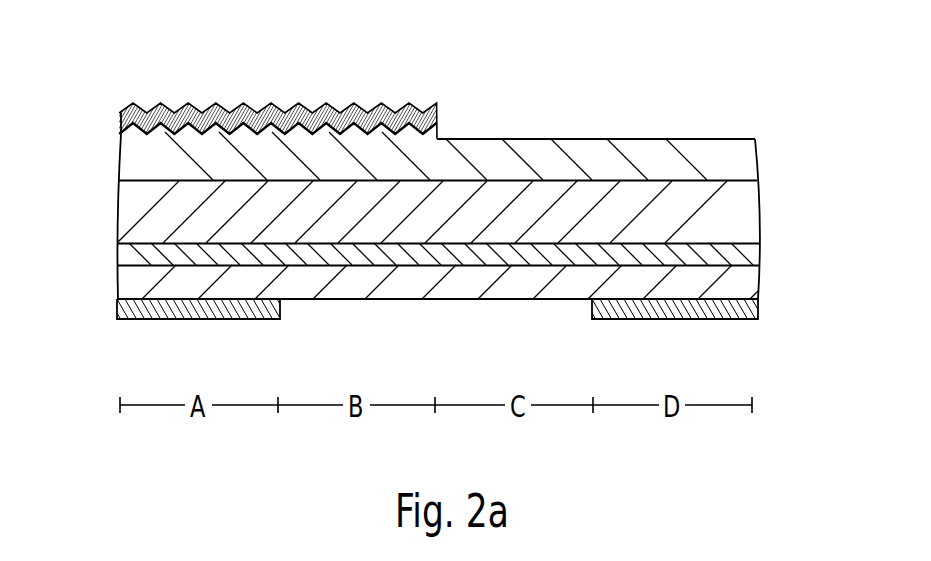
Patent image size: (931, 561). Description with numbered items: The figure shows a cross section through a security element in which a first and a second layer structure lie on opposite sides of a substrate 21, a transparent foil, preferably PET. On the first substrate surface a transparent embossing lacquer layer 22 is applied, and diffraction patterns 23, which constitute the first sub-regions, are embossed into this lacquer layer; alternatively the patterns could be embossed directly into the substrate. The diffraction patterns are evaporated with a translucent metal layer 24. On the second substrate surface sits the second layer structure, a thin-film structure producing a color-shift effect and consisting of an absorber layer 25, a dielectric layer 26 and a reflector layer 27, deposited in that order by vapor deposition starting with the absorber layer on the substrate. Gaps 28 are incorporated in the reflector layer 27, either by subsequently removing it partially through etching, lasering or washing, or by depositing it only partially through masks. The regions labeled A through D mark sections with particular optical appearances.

The substrate 21 is at (740, 210).
The embossing lacquer layer 22 is at (745, 155).
The diffraction patterns 23 is at (122, 143).
The translucent metal layer 24 is at (257, 113).
The absorber layer 25 is at (747, 252).
The dielectric layer 26 is at (740, 283).
The reflector layer 27 is at (127, 303).
The gaps 28 is at (455, 310).